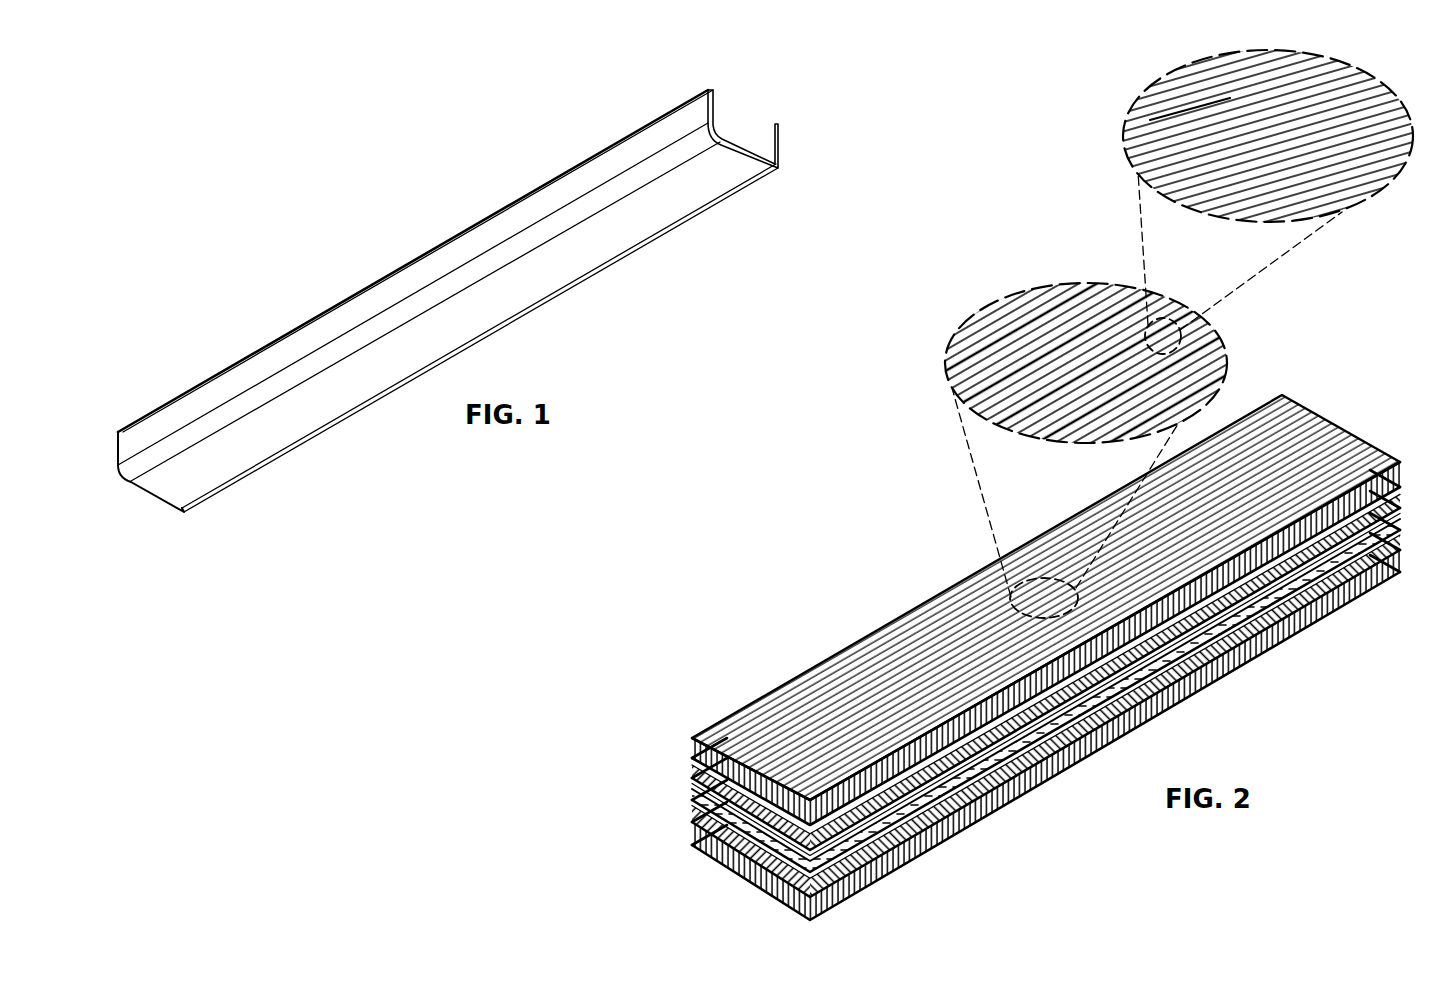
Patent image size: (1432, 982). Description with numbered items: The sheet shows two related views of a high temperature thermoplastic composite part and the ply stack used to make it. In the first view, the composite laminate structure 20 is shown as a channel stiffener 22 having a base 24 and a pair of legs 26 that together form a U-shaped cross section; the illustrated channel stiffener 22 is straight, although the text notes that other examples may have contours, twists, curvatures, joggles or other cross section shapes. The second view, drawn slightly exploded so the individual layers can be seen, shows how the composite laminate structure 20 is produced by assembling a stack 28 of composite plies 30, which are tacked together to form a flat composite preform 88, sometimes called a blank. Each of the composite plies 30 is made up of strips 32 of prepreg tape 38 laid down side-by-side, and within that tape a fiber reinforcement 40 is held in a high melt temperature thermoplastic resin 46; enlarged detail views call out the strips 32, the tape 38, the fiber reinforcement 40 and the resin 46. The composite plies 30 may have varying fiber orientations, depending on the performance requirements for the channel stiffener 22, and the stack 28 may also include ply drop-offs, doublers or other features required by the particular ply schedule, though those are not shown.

In FIG. 1, the composite laminate structure 20 is at (454, 313).
In FIG. 1, the channel stiffener 22 is at (700, 195).
In FIG. 1, the base 24 is at (168, 493).
In FIG. 1, the legs 26 is at (412, 270).
In FIG. 2, the stack 28 is at (1027, 463).
In FIG. 2, the composite plies 30 is at (1016, 569).
In FIG. 2, the strips of prepreg tape 32 is at (1046, 569).
In FIG. 2, the prepreg tape 38 is at (957, 353).
In FIG. 2, the fiber reinforcement 40 is at (1262, 72).
In FIG. 2, the high melt temperature thermoplastic resin 46 is at (1188, 86).
In FIG. 2, the flat composite preform 88 is at (826, 586).